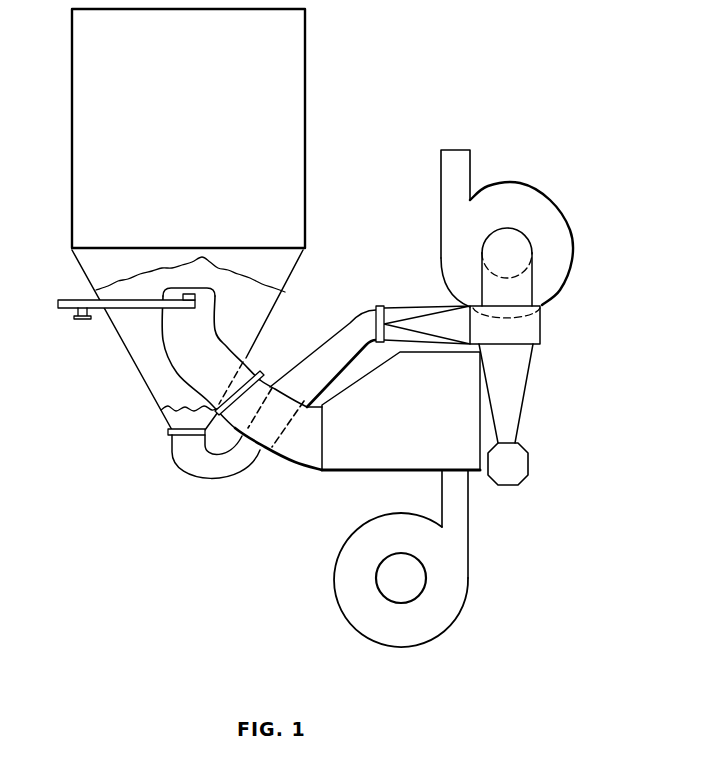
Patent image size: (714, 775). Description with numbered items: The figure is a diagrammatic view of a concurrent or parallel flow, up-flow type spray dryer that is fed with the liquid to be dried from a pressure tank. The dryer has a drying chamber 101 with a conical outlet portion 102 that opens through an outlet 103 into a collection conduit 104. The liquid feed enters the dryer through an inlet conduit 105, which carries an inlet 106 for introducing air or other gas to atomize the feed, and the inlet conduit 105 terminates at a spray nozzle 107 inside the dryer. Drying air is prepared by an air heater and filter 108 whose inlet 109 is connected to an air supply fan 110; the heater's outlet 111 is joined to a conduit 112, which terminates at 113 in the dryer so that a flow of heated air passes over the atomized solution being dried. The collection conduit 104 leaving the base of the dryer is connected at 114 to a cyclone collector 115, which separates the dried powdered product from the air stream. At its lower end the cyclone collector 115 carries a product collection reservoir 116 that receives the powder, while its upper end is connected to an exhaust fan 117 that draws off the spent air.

The drying chamber 101 is at (78, 98).
The conical outlet portion 102 is at (158, 397).
The outlet 103 is at (170, 437).
The collection conduit 104 is at (197, 470).
The inlet conduit 105 is at (75, 300).
The inlet 106 is at (85, 315).
The spray nozzle 107 is at (187, 303).
The air heater and filter 108 is at (418, 463).
The inlet 109 is at (460, 518).
The air supply fan 110 is at (342, 595).
The outlet 111 is at (300, 457).
The conduit 112 is at (290, 360).
The conduit termination 113 is at (203, 258).
The connection 114 is at (413, 293).
The cyclone collector 115 is at (538, 347).
The product collection reservoir 116 is at (518, 483).
The exhaust fan 117 is at (507, 190).